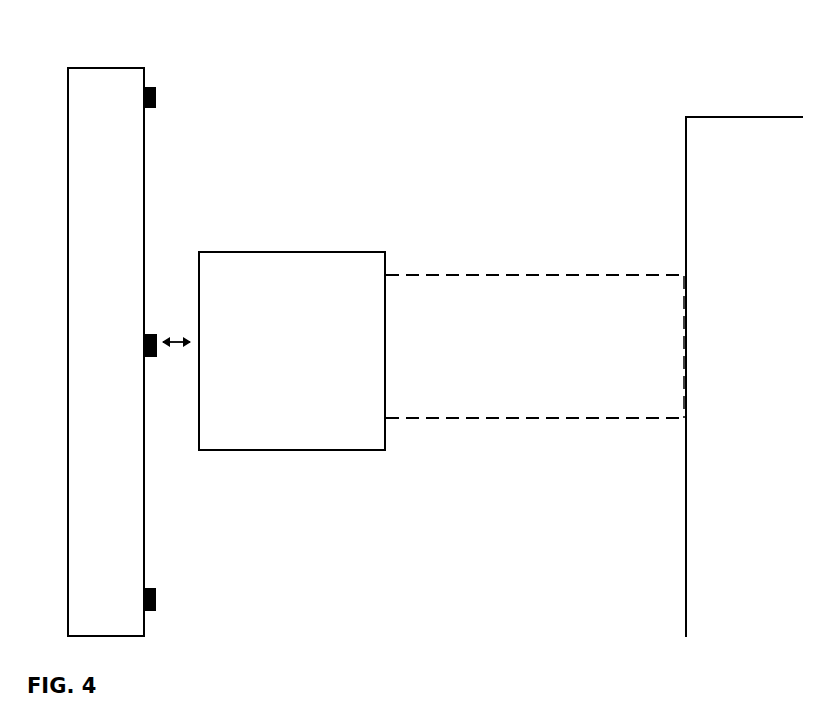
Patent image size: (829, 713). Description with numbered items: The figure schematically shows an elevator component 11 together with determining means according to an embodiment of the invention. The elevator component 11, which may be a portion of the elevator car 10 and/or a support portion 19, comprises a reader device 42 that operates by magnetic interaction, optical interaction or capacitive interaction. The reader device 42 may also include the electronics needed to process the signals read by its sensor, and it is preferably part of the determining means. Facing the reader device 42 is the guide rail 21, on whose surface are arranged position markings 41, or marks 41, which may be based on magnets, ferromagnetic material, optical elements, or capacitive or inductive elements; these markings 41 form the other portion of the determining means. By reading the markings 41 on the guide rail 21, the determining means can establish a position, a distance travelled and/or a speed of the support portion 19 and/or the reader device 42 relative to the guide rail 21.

The elevator car 10 is at (744, 377).
The elevator component 11 is at (441, 171).
The support portion 19 is at (528, 420).
The guide rail 21 is at (104, 74).
The position markings 41 is at (155, 88).
The reader device 42 is at (292, 351).